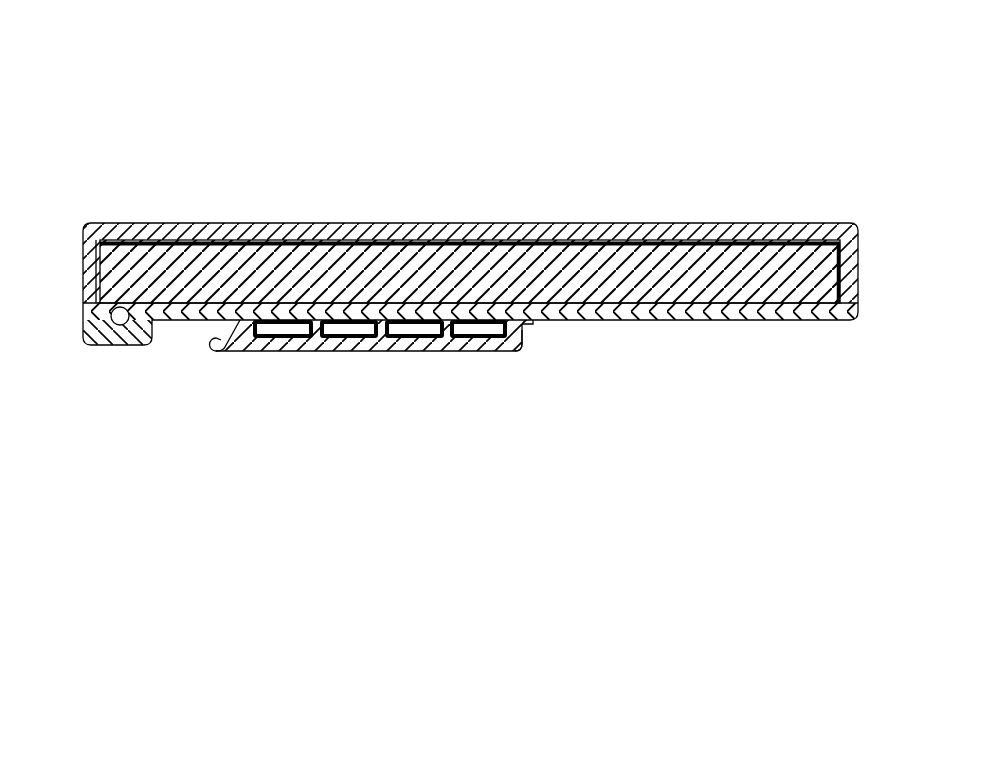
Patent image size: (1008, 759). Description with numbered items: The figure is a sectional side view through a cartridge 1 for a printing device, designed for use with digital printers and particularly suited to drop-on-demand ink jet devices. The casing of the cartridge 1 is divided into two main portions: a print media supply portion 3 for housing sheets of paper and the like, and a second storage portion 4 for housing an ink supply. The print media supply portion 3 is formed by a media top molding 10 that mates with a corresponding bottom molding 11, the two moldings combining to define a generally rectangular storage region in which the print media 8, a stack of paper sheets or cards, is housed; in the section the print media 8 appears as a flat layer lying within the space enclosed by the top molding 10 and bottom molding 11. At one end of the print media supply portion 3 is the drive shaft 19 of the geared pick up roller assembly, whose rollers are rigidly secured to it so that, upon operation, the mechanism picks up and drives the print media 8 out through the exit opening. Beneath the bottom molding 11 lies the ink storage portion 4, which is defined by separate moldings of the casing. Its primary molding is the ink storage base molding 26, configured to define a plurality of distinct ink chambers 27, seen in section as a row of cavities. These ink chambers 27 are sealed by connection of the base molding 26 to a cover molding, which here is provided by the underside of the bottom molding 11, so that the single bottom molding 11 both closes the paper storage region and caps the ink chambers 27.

The cartridge 1 is at (585, 131).
The print media supply portion 3 is at (869, 236).
The second storage portion 4 is at (220, 358).
The print media 8 is at (275, 262).
The media top molding 10 is at (823, 232).
The bottom molding 11 is at (748, 316).
The drive shaft 19 is at (110, 347).
The ink storage base molding 26 is at (512, 352).
The ink chambers 27 is at (367, 325).